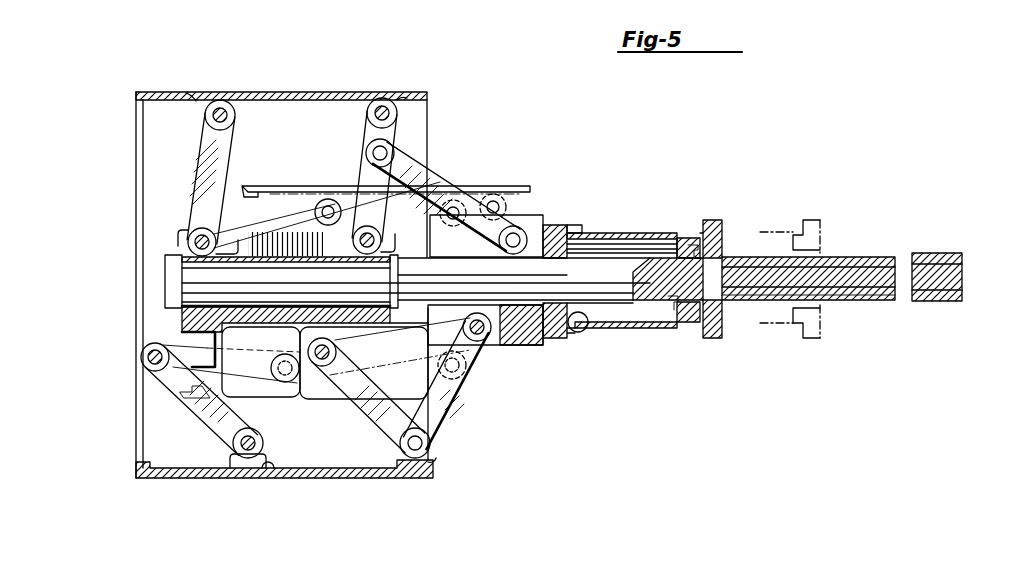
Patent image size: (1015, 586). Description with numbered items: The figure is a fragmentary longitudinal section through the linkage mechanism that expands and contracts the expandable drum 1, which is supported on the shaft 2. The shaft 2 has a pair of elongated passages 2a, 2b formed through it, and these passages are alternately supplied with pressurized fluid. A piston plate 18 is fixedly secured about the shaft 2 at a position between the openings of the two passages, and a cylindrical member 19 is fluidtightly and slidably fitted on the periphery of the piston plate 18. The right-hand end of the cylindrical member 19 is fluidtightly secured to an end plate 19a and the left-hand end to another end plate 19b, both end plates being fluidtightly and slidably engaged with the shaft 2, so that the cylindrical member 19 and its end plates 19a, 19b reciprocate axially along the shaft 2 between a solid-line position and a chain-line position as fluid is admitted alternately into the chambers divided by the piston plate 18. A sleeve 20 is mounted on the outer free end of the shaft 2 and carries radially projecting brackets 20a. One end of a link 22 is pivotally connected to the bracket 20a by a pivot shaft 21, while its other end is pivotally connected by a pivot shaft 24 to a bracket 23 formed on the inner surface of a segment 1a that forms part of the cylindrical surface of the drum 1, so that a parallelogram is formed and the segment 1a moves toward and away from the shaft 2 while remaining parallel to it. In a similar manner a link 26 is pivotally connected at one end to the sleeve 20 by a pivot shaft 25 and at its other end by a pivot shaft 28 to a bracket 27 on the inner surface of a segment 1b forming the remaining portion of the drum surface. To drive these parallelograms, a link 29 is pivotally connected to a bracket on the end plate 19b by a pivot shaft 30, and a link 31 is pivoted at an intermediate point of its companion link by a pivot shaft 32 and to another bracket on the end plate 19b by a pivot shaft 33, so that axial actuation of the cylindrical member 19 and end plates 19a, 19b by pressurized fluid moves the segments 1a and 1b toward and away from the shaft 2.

The expandable drum 1 is at (333, 88).
The segment 1a is at (318, 478).
The segment 1b is at (292, 93).
The shaft 2 is at (605, 272).
The elongated passage 2a is at (846, 261).
The elongated passage 2b is at (846, 288).
The piston plate 18 is at (689, 330).
The cylindrical member 19 is at (646, 230).
The end plate 19a is at (709, 222).
The end plate 19b is at (557, 332).
The sleeve 20 is at (242, 329).
The bracket 20a is at (178, 370).
The pivot shaft 21 is at (141, 357).
The parallel link 22 is at (198, 422).
The bracket 23 is at (270, 468).
The pivot shaft 24 is at (247, 460).
The pivot shaft 25 is at (193, 230).
The parallel link 26 is at (210, 154).
The bracket 27 is at (195, 99).
The pivot shaft 28 is at (220, 100).
The link 29 is at (440, 413).
The pivot shaft 30 is at (485, 350).
The link 31 is at (400, 180).
The pivot shaft 32 is at (394, 156).
The pivot shaft 33 is at (536, 217).